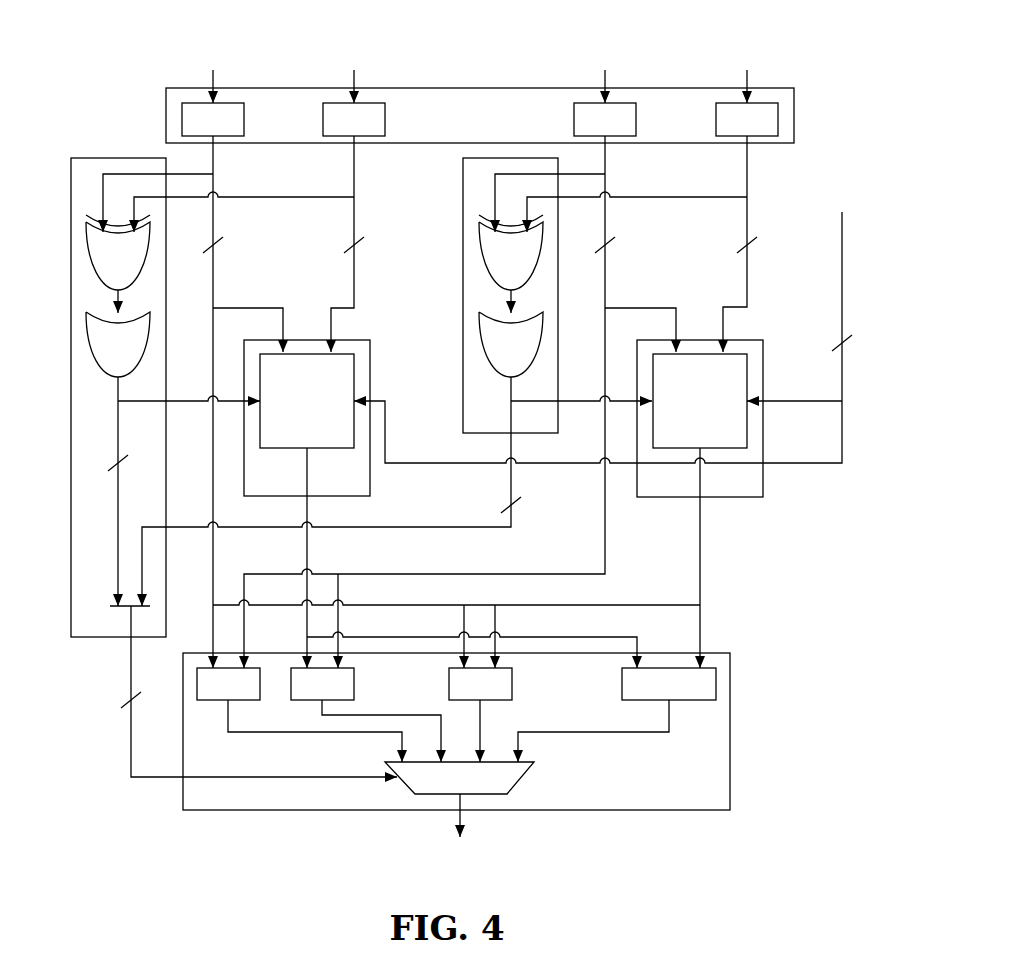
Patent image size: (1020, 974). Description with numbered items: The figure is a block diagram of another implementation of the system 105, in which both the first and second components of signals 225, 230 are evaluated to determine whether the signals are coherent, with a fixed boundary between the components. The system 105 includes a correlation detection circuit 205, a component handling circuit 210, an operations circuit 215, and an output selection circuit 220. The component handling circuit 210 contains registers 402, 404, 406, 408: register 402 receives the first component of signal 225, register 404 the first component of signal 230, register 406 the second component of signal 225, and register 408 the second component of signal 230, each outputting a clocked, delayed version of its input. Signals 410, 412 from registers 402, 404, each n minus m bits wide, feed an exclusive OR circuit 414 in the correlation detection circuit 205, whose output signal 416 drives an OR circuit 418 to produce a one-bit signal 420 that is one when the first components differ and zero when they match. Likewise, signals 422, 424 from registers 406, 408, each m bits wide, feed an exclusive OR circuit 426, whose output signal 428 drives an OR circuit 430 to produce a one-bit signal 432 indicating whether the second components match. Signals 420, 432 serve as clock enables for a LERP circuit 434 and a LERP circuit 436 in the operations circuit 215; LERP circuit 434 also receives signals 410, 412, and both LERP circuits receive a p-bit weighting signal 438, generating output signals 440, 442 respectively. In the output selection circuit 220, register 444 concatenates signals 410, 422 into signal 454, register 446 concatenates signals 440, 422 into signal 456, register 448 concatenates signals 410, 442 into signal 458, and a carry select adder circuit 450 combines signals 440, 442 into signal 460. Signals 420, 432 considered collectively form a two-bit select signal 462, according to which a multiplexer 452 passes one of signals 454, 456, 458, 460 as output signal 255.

The system 105 is at (436, 18).
The correlation detection circuit 205 is at (80, 628).
The component handling circuit 210 is at (466, 125).
The operations circuit 215 is at (252, 488).
The output selection circuit 220 is at (698, 803).
The signal 225 is at (408, 76).
The signal 230 is at (550, 76).
The signal 255 is at (460, 828).
The register 402 is at (213, 119).
The register 404 is at (354, 119).
The register 406 is at (605, 119).
The register 408 is at (747, 119).
The signal 410 is at (213, 182).
The signal 412 is at (354, 182).
The exclusive OR circuit 414 is at (118, 252).
The output signal 416 is at (118, 305).
The OR circuit 418 is at (118, 344).
The output signal 420 is at (118, 433).
The signal 422 is at (605, 182).
The signal 424 is at (747, 182).
The exclusive OR circuit 426 is at (511, 252).
The output signal 428 is at (511, 305).
The OR circuit 430 is at (511, 344).
The output signal 432 is at (511, 399).
The linear interpolation (LERP) circuit 434 is at (307, 401).
The LERP circuit 436 is at (700, 401).
The signal 438 is at (615, 327).
The output signal 440 is at (307, 558).
The output signal 442 is at (700, 558).
The register 444 is at (228, 684).
The register 446 is at (322, 684).
The register 448 is at (480, 684).
The carry select adder circuit 450 is at (669, 684).
The multiplexer 452 is at (459, 778).
The signal 454 is at (268, 732).
The signal 456 is at (390, 715).
The signal 458 is at (480, 723).
The signal 460 is at (580, 732).
The signal 462 is at (131, 747).